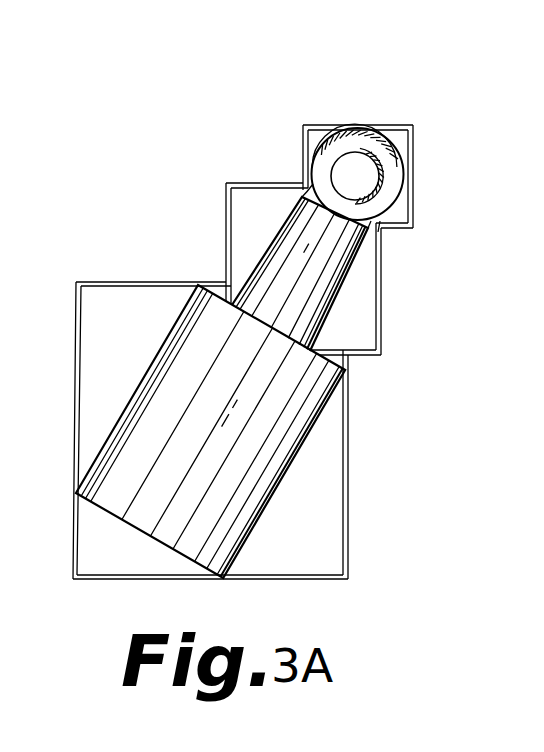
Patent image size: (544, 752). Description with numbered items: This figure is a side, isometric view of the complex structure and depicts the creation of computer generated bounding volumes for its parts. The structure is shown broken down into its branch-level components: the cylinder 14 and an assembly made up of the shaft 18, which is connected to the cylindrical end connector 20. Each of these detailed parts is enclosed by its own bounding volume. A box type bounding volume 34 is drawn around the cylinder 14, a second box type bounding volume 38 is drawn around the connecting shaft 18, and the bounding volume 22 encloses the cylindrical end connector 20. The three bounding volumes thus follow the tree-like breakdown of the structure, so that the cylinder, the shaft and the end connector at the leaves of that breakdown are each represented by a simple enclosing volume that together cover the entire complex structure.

The cylinder 14 is at (288, 468).
The shaft 18 is at (327, 300).
The cylindrical end connector 20 is at (383, 197).
The bounding volume 22 is at (413, 149).
The box type bounding volume 34 is at (348, 536).
The box type bounding volume 38 is at (382, 337).